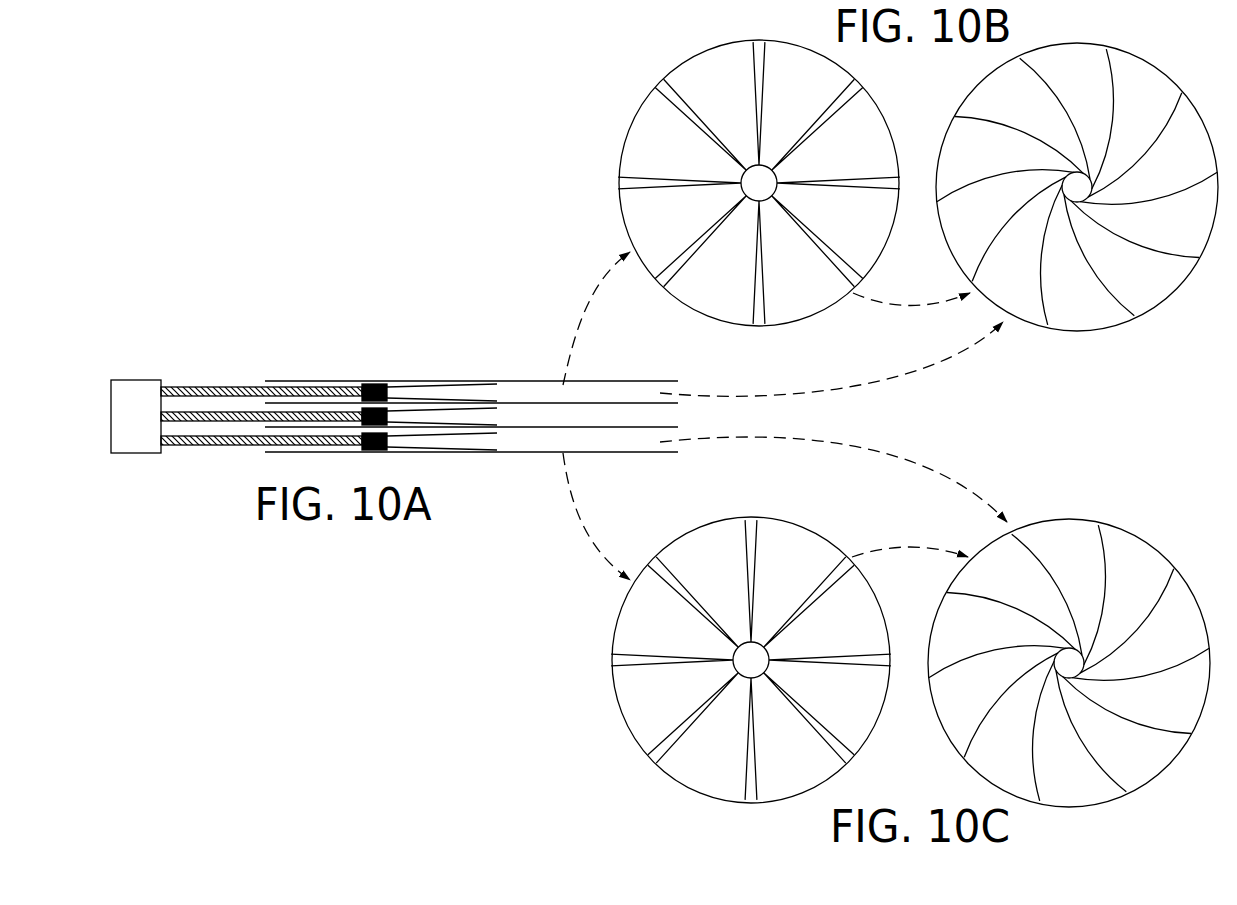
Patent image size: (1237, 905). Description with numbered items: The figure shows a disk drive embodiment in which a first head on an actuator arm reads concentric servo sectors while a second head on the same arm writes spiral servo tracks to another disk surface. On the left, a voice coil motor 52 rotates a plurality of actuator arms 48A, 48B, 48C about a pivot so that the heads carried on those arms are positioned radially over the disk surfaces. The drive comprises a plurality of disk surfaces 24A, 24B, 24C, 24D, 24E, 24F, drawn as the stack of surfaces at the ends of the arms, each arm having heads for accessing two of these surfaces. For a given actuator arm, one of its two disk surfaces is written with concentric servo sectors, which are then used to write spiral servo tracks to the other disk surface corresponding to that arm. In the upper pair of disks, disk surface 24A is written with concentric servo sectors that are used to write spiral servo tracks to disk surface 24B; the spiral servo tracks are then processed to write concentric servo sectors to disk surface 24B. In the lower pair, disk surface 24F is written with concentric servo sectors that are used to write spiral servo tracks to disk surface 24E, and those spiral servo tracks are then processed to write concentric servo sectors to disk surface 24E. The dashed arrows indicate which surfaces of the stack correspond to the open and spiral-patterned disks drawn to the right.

In FIG. 10A, the voice coil motor 52 is at (136, 380).
In FIG. 10A, the actuator arm 48A is at (236, 387).
In FIG. 10A, the actuator arm 48B is at (190, 412).
In FIG. 10A, the actuator arm 48C is at (203, 446).
In FIG. 10A, the disk surface 24A is at (607, 381).
In FIG. 10B, the disk surface 24A is at (651, 73).
In FIG. 10A, the disk surface 24B is at (557, 381).
In FIG. 10B, the disk surface 24B is at (1167, 63).
In FIG. 10A, the disk surface 24C is at (607, 405).
In FIG. 10A, the disk surface 24D is at (613, 424).
In FIG. 10A, the disk surface 24E is at (607, 429).
In FIG. 10C, the disk surface 24E is at (1169, 779).
In FIG. 10A, the disk surface 24F is at (613, 447).
In FIG. 10C, the disk surface 24F is at (641, 762).